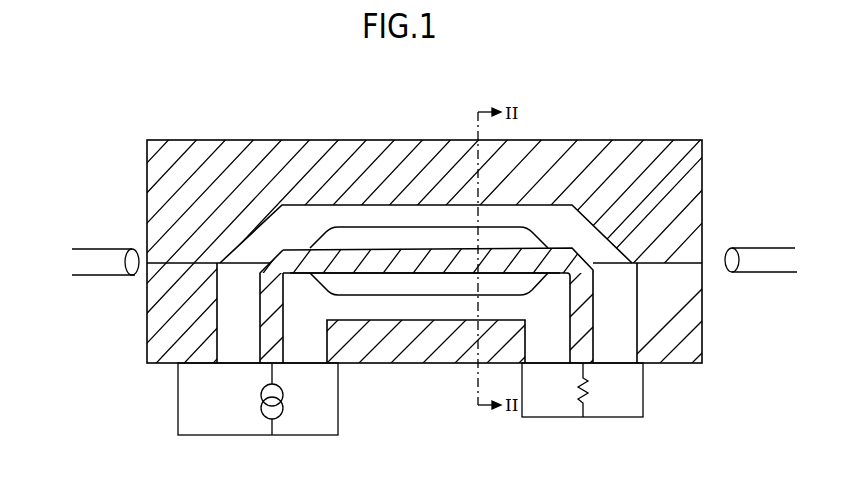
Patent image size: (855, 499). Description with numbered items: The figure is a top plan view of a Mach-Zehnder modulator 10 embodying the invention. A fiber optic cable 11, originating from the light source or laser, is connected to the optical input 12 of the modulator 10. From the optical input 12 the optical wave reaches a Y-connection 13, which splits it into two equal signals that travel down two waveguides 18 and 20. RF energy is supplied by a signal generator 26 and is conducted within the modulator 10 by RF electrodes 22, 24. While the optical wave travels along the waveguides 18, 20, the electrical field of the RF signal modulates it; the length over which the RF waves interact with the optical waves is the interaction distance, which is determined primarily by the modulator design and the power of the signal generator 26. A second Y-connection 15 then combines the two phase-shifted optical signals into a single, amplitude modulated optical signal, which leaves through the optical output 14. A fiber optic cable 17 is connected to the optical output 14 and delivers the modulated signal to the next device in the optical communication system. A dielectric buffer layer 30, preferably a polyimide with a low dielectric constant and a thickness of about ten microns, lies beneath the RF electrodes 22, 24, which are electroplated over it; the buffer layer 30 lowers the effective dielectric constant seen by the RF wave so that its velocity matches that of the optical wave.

The modulator 10 is at (175, 77).
The fiber optic cable 11 is at (90, 255).
The optical input 12 is at (140, 267).
The Y-connection 13 is at (288, 262).
The optical output 14 is at (703, 260).
The second Y-connection 15 is at (547, 258).
The fiber optic cable 17 is at (768, 258).
The waveguide 18 is at (392, 235).
The waveguide 20 is at (355, 297).
The RF electrode 22 is at (645, 140).
The RF electrode 24 is at (388, 274).
The signal generator 26 is at (262, 410).
The dielectric buffer layer 30 is at (620, 300).